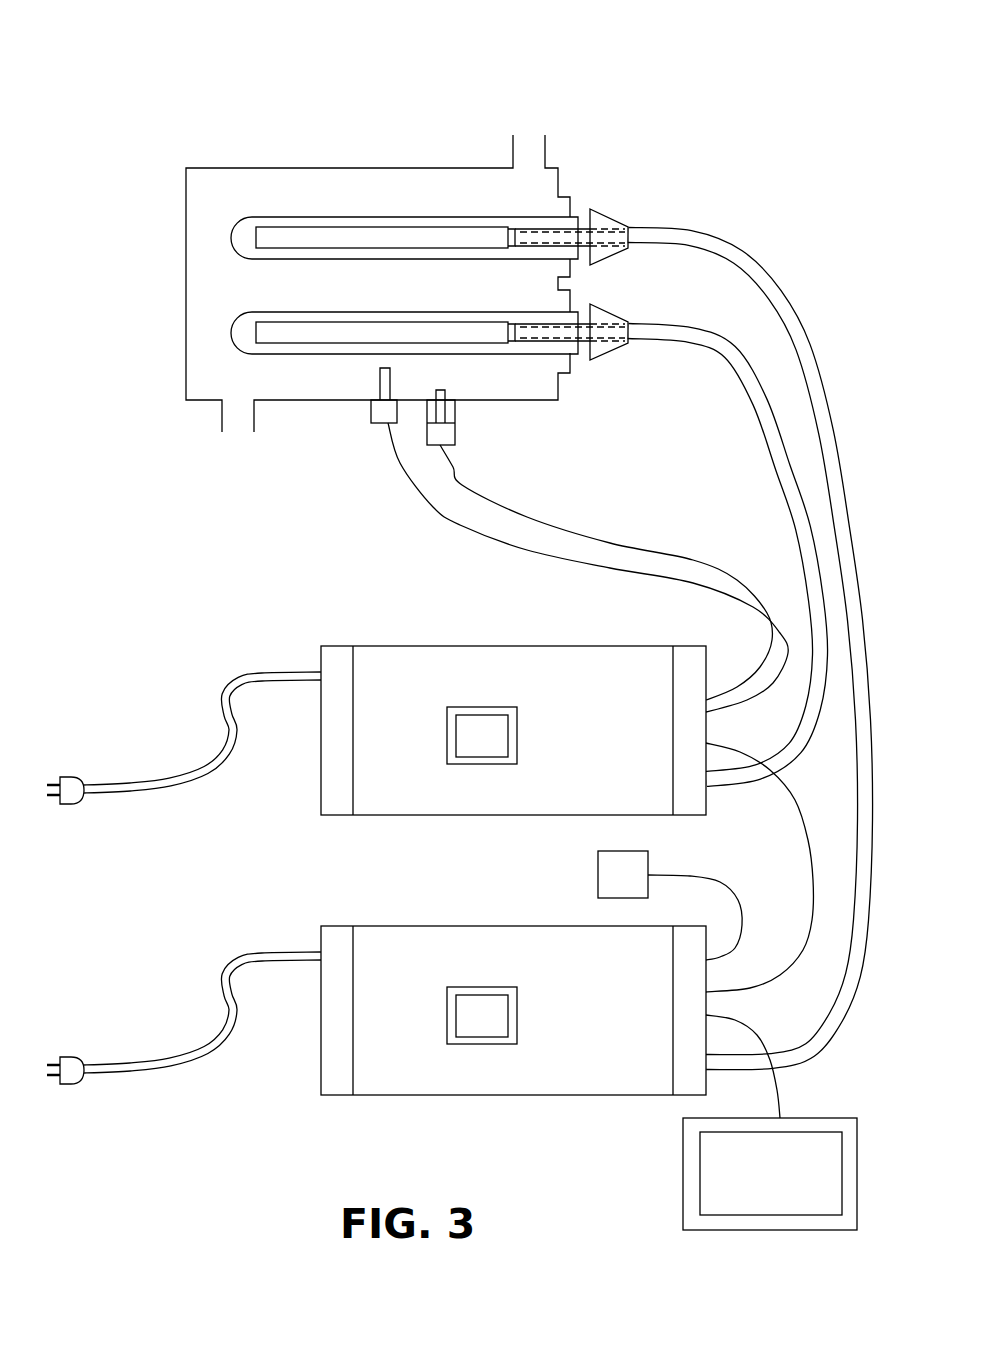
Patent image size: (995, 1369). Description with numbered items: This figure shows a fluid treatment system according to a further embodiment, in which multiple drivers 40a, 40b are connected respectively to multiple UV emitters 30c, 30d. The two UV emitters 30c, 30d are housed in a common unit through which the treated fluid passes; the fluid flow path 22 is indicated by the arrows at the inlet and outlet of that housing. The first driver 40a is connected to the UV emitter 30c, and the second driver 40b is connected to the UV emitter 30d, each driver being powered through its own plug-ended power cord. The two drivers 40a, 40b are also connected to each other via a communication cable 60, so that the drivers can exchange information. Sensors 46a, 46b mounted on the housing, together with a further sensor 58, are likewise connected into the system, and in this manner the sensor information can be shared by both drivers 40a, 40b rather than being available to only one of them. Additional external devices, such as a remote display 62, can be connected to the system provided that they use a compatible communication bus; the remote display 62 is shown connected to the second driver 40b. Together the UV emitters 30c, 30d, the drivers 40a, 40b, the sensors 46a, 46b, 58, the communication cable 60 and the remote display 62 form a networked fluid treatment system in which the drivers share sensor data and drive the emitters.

The fluid flow path 22 is at (529, 133).
The UV emitter 30c is at (362, 227).
The UV emitter 30d is at (280, 320).
The sensor 46a is at (362, 415).
The sensor 46b is at (457, 436).
The driver 40a is at (438, 815).
The driver 40b is at (440, 1095).
The sensor 58 is at (598, 885).
The communication cable 60 is at (808, 840).
The remote display 62 is at (820, 1118).